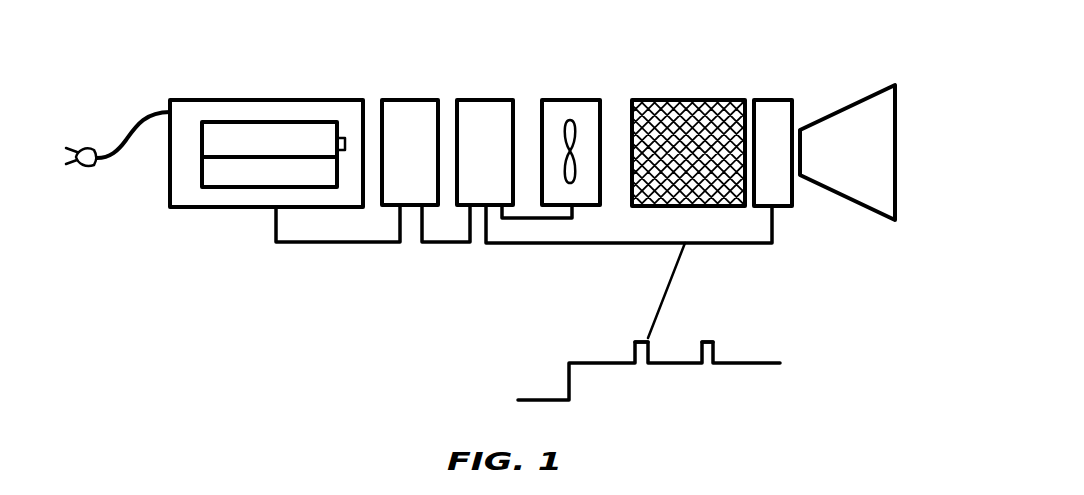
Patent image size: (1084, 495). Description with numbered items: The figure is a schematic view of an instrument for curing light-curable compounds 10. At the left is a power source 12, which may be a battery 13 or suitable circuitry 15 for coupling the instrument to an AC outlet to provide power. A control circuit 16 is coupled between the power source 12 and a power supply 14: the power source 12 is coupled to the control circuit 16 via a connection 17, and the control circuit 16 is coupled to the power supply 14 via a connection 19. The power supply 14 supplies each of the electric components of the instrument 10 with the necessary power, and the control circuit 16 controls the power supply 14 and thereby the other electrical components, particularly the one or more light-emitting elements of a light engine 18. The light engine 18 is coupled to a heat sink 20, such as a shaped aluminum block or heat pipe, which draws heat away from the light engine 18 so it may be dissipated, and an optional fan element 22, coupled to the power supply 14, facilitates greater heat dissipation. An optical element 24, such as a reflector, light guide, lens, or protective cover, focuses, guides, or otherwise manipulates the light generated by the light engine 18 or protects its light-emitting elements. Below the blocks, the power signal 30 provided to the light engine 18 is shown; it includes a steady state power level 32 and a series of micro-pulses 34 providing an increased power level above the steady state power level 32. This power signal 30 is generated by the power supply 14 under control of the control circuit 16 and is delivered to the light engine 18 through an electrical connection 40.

The instrument for curing light-curable compounds 10 is at (314, 336).
The power source 12 is at (261, 96).
The battery 13 is at (299, 163).
The power supply 14 is at (490, 98).
The circuitry for coupling to an AC outlet 15 is at (112, 148).
The control circuit 16 is at (405, 98).
The connection 17 is at (305, 244).
The light engine 18 is at (768, 98).
The connection 19 is at (458, 244).
The heat sink 20 is at (682, 98).
The fan element 22 is at (573, 98).
The optical element 24 is at (861, 99).
The power signal 30 is at (658, 321).
The steady state power level 32 is at (752, 360).
The micro-pulses 34 is at (708, 343).
The electrical connection 40 is at (572, 245).